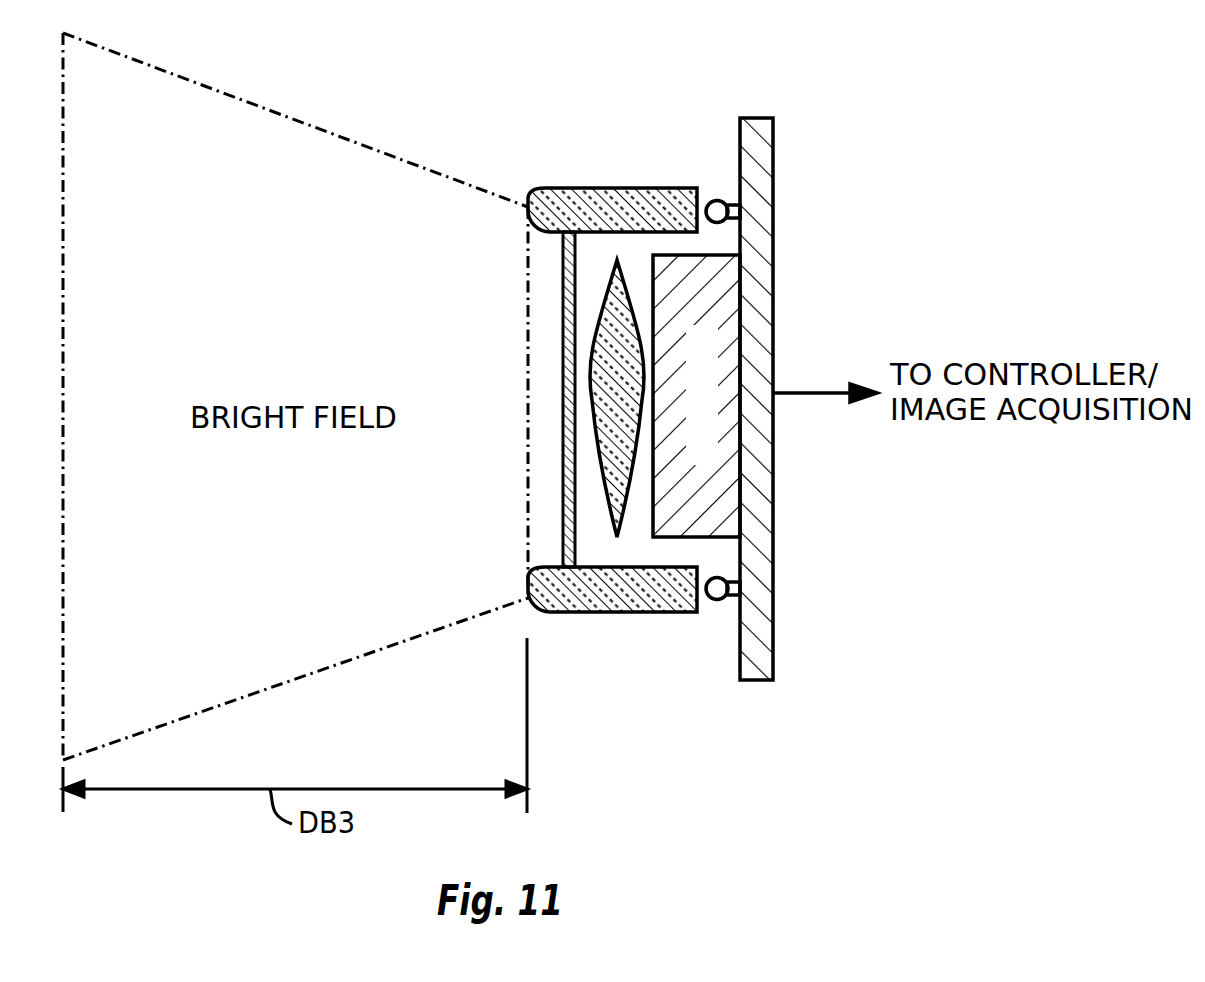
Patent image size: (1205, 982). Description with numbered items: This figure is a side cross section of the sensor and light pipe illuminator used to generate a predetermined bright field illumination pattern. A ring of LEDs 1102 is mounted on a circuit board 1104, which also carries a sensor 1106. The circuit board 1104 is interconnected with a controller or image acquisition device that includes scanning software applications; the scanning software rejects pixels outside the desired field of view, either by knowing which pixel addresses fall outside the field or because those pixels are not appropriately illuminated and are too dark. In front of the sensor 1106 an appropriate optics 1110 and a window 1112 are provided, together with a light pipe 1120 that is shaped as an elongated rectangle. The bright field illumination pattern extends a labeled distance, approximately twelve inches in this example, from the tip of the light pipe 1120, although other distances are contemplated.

The LEDs 1102 is at (715, 200).
The circuit board 1104 is at (773, 531).
The sensor 1106 is at (733, 451).
The optics 1110 is at (612, 500).
The window 1112 is at (563, 484).
The light pipe 1120 is at (648, 613).